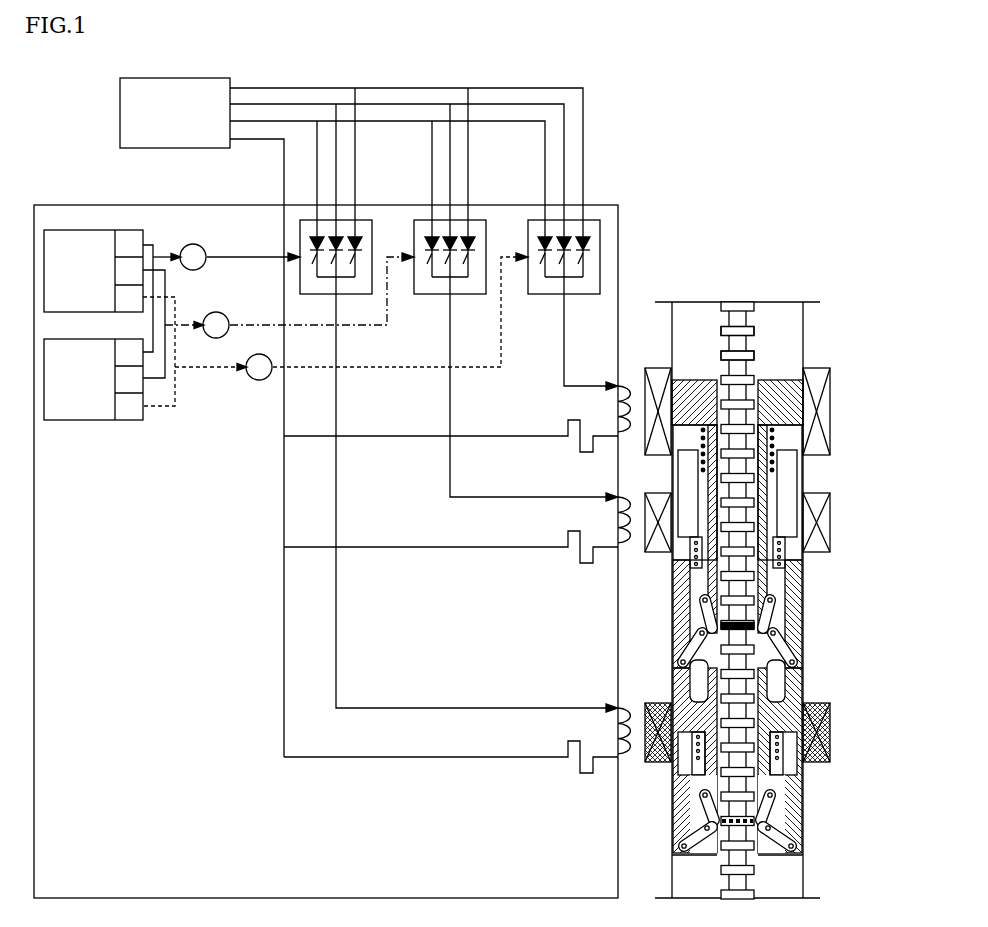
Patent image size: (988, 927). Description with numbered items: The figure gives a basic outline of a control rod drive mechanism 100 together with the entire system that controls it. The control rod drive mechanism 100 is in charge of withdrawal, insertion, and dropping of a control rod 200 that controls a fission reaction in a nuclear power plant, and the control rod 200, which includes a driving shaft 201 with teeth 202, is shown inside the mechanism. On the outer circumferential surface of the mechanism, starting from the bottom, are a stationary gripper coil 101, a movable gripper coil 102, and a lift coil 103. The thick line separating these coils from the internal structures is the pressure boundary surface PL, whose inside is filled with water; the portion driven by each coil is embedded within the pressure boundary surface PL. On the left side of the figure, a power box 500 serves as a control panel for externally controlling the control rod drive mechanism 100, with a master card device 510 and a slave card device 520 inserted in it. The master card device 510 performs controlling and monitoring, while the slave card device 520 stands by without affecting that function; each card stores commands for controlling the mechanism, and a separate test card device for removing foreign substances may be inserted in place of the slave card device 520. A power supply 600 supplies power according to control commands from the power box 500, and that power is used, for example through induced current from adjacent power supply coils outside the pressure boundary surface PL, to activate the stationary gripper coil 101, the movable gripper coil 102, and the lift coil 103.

The control rod drive mechanism 100 is at (780, 548).
The stationary gripper coil 101 is at (845, 729).
The movable gripper coil 102 is at (845, 514).
The lift coil 103 is at (845, 401).
The control rod 200 is at (742, 287).
The driving shaft 201 is at (730, 343).
The teeth 202 is at (722, 331).
The power box 500 is at (102, 871).
The master card device 510 is at (109, 318).
The slave card device 520 is at (93, 379).
The power supply 600 is at (351, 417).
The pressure boundary surface PL is at (815, 838).